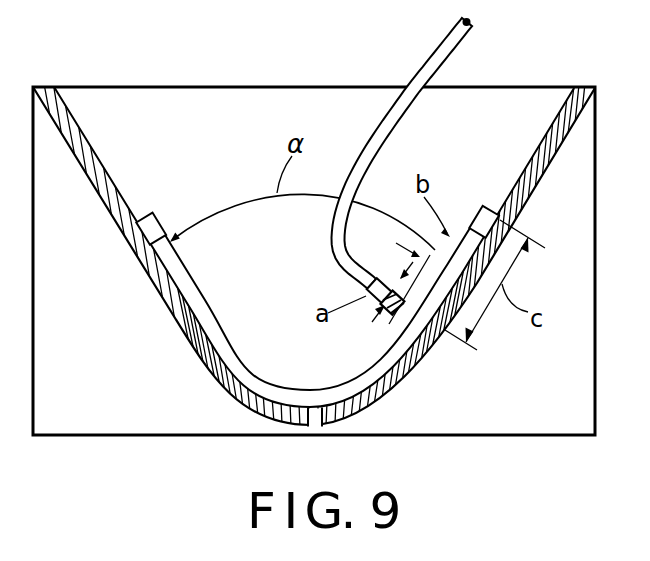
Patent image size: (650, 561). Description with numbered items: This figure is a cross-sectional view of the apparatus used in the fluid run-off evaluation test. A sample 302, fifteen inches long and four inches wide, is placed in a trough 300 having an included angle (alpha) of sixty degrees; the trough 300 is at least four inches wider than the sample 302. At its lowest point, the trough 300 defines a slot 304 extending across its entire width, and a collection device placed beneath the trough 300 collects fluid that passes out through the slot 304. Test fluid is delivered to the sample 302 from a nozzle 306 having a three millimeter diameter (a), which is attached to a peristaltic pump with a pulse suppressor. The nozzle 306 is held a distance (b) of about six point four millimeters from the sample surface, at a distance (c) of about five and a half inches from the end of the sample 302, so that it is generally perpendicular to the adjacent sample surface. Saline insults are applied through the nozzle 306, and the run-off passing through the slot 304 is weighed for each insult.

The trough 300 is at (86, 133).
The sample 302 is at (474, 210).
The slot 304 is at (315, 427).
The nozzle 306 is at (378, 274).